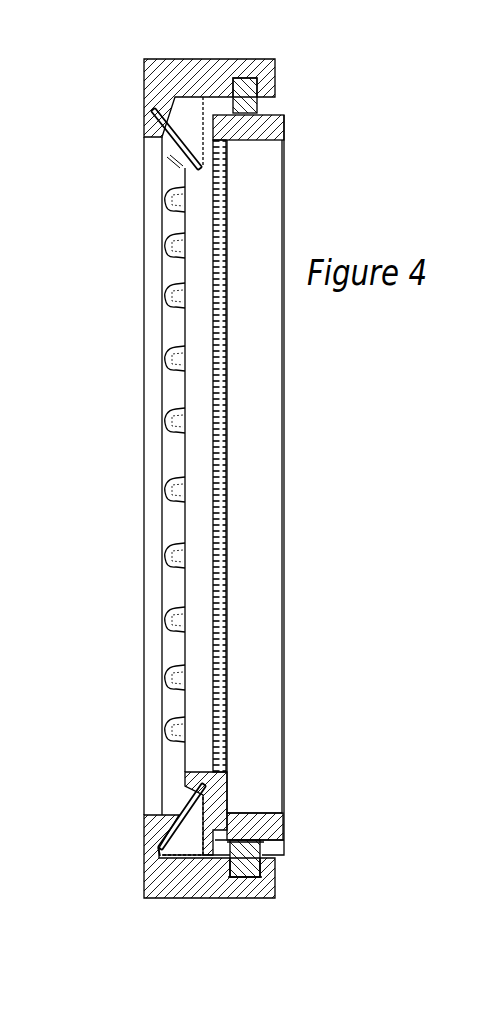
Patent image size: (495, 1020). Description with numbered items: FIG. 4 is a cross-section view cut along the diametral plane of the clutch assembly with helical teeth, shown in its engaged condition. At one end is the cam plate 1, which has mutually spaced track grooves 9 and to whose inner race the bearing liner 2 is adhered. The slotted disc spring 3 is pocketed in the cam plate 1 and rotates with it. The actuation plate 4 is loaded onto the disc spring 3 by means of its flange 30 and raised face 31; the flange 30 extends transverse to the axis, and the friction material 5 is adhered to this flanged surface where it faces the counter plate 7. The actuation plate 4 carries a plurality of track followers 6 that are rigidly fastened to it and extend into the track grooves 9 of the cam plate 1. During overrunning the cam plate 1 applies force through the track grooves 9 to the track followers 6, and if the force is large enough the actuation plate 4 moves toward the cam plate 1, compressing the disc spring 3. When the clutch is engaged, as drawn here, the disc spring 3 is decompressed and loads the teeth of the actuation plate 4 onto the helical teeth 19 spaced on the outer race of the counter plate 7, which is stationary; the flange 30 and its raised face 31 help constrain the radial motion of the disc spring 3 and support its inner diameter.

The cam plate 1 is at (162, 874).
The bearing liner 2 is at (268, 859).
The slotted disc spring 3 is at (180, 801).
The actuation plate 4 is at (201, 840).
The friction material 5 is at (223, 783).
The track followers 6 is at (237, 879).
The counter plate 7 is at (241, 830).
The track grooves 9 is at (238, 80).
The helical teeth 19 is at (266, 126).
The flange 30 is at (214, 148).
The raised face 31 is at (213, 182).